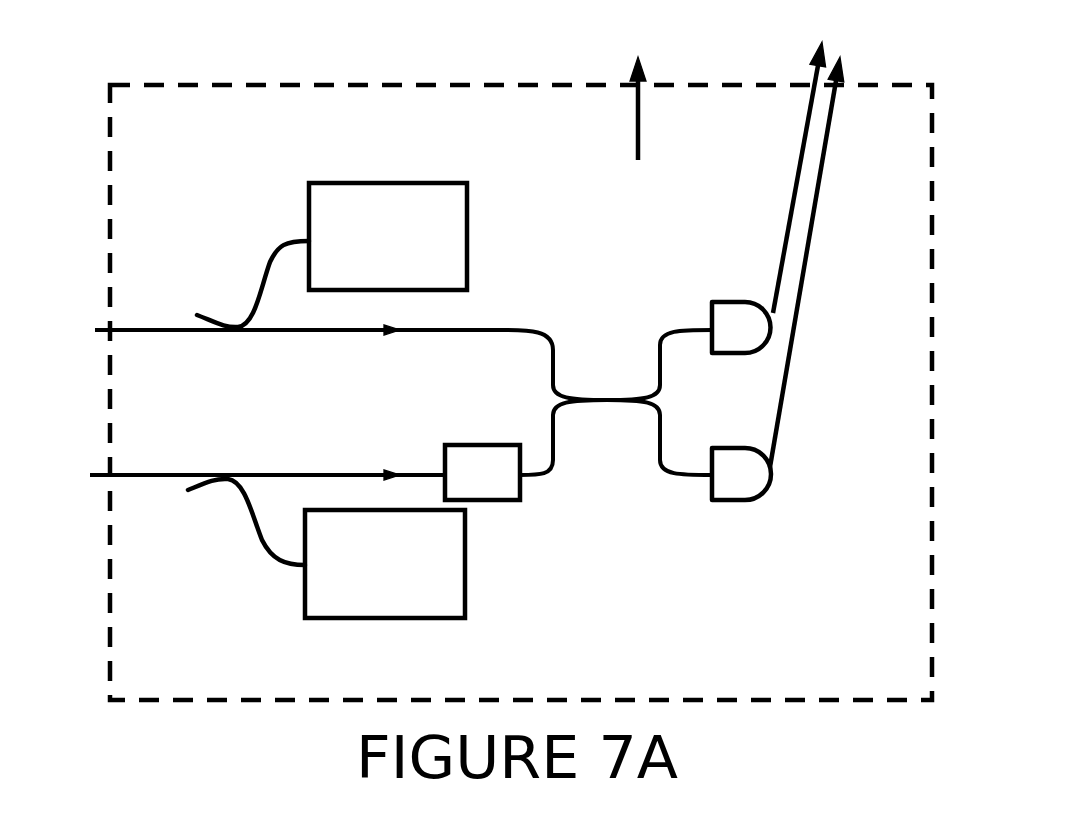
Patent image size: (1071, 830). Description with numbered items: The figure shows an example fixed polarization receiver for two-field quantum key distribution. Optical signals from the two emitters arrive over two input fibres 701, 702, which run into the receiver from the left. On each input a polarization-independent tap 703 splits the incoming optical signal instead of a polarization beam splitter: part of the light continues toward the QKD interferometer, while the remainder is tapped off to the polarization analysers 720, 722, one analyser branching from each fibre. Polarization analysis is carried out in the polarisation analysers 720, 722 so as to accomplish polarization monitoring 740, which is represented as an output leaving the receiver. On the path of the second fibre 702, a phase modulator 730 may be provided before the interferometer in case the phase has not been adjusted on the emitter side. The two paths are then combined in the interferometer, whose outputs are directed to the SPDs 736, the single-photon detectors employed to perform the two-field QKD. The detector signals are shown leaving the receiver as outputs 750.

The fibre 701 is at (258, 317).
The fibre 702 is at (231, 460).
The polarization-independent tap 703 is at (237, 284).
The polarization analyser 720 is at (388, 236).
The polarization analyser 722 is at (326, 548).
The phase modulator 730 is at (482, 472).
The SPDs 736 is at (740, 340).
The polarization monitoring 740 is at (645, 86).
The detector output signals 750 is at (821, 233).